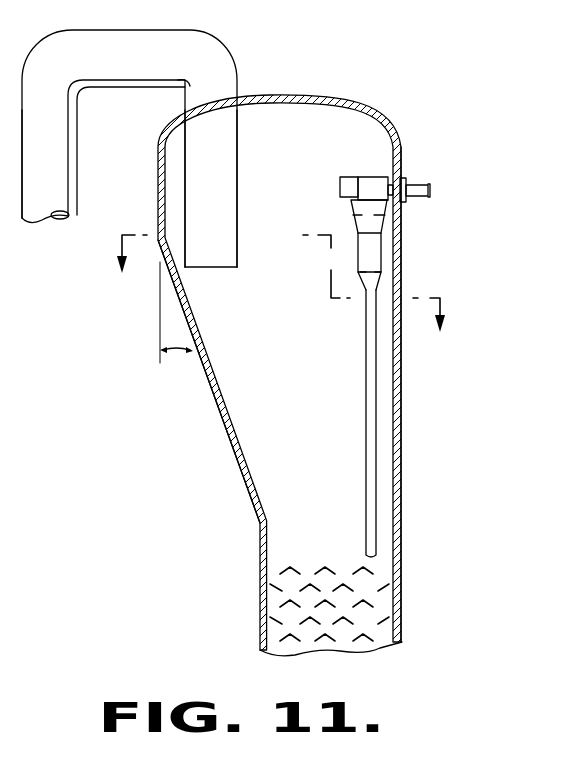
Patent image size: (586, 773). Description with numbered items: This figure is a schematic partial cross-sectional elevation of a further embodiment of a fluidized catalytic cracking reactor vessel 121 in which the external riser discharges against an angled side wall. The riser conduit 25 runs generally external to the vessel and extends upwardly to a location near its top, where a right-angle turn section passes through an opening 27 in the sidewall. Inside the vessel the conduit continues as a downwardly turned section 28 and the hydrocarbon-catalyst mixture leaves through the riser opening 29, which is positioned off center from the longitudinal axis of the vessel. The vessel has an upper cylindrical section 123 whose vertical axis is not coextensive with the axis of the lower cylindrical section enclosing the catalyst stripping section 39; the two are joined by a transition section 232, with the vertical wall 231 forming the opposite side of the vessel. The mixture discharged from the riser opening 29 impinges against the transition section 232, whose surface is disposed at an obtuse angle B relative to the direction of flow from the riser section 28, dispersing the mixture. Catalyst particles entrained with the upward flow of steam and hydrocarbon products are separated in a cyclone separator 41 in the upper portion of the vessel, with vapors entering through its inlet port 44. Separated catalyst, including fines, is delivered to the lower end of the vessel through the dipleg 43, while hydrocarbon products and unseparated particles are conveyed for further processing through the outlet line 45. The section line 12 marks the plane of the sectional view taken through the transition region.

The reactor vessel 121 is at (304, 91).
The opening 27 is at (110, 35).
The riser conduit 25 is at (68, 163).
The downwardly turned section 28 is at (233, 163).
The riser opening 29 is at (218, 268).
The cyclone separator 41 is at (368, 177).
The inlet port 44 is at (341, 185).
The outlet line 45 is at (426, 185).
The dipleg 43 is at (372, 402).
The upper cylindrical section 123 is at (401, 230).
The transition section 232 is at (222, 425).
The vertical side wall 231 is at (402, 480).
The catalyst stripping section 39 is at (418, 563).
The section line 12- 12 is at (281, 305).
The obtuse angle B is at (176, 326).